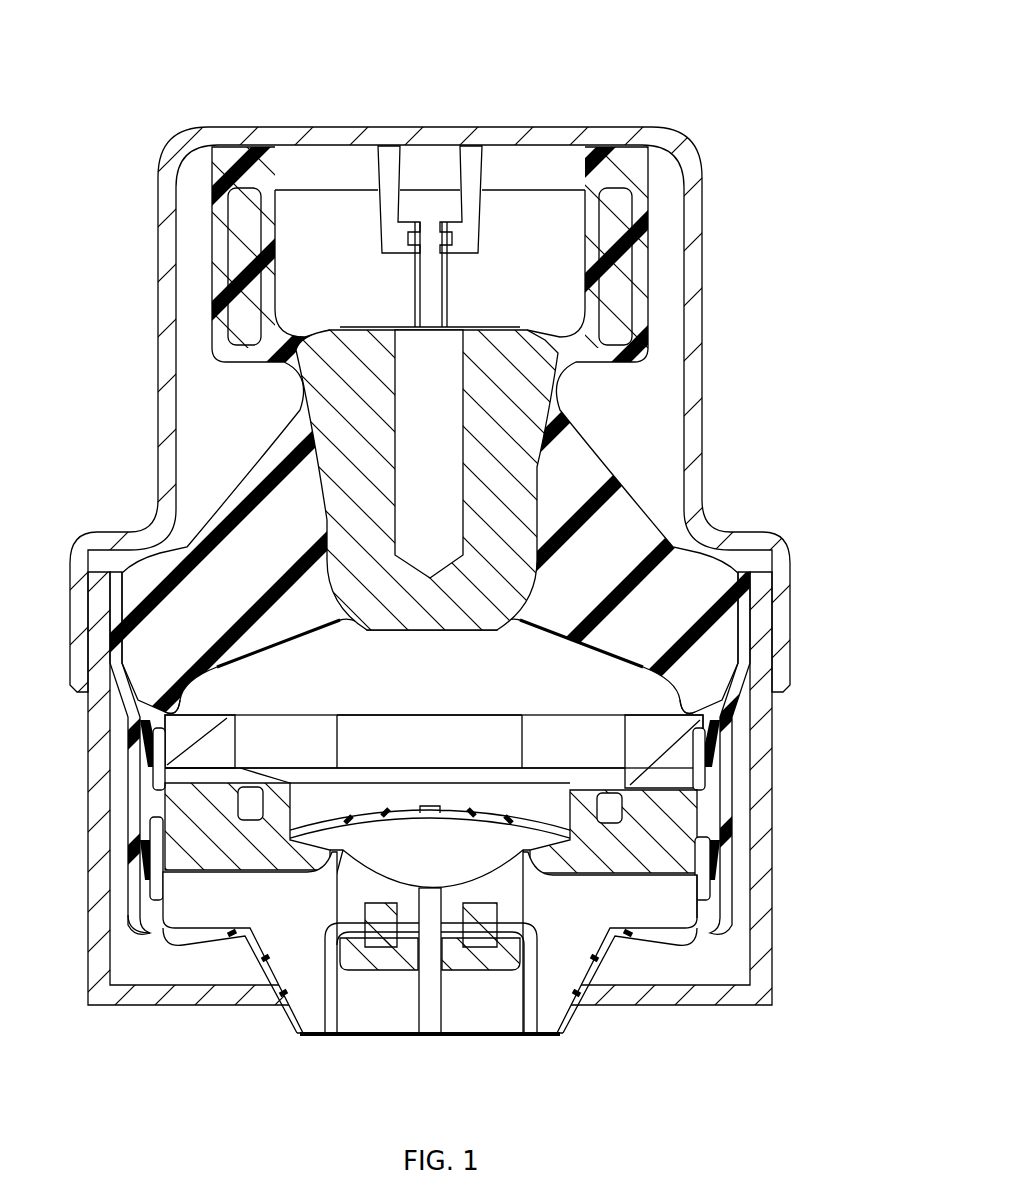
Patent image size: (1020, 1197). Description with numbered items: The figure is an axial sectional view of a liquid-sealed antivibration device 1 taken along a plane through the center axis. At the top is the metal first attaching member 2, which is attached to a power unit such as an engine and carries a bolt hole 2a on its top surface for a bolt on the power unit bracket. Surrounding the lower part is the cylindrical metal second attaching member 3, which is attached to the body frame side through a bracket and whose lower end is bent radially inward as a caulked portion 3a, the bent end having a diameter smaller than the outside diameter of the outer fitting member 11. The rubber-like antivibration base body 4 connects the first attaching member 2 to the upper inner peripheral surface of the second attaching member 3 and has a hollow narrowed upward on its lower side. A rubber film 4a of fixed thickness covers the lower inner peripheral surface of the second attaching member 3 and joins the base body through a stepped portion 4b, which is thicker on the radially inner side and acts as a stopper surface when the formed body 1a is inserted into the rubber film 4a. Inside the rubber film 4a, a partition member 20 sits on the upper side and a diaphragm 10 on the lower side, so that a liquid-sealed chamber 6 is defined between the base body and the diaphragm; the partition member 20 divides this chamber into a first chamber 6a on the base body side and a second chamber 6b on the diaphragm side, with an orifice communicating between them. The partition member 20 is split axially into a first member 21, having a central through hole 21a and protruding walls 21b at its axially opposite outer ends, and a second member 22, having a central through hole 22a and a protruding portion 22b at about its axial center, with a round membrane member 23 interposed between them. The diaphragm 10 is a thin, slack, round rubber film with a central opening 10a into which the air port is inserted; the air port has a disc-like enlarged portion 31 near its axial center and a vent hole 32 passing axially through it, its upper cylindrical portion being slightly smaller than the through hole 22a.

The liquid-sealed antivibration device 1 is at (748, 86).
The formed body 1a is at (568, 1040).
The first attaching member 2 is at (495, 345).
The bolt hole 2a is at (462, 372).
The second attaching member 3 is at (130, 830).
The caulked portion 3a is at (147, 922).
The antivibration base body 4 is at (312, 606).
The rubber film 4a is at (710, 800).
The stepped portion 4b is at (680, 697).
The liquid-sealed chamber 6 is at (610, 942).
The first chamber 6a is at (430, 700).
The second chamber 6b is at (282, 890).
The diaphragm 10 is at (481, 954).
The opening 10a is at (397, 945).
The outer fitting member 11 is at (697, 877).
The partition member 20 is at (337, 704).
The first member 21 is at (428, 752).
The through hole 21a is at (466, 775).
The protruding walls 21b is at (708, 730).
The second member 22 is at (423, 841).
The through hole 22a is at (440, 888).
The protruding portion 22b is at (700, 825).
The membrane member 23 is at (380, 830).
The enlarged portion 31 is at (467, 963).
The vent hole 32 is at (437, 1010).